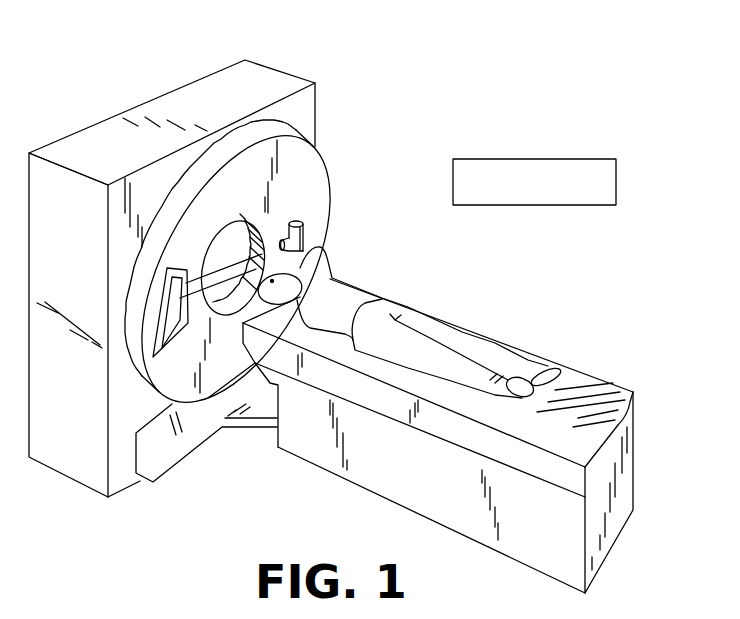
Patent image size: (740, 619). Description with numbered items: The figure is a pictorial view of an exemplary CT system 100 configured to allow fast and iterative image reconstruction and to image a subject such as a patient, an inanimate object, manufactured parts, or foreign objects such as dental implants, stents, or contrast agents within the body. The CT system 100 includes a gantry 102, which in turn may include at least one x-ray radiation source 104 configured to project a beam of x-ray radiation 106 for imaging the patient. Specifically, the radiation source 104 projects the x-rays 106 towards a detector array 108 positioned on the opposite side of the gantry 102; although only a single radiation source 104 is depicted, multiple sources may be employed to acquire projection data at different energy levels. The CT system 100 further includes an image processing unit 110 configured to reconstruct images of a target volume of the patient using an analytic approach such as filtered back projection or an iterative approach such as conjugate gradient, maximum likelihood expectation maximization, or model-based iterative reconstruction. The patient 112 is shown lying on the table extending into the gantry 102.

The CT system 100 is at (568, 46).
The gantry 102 is at (446, 182).
The x-ray radiation source 104 is at (307, 240).
The beam of x-ray radiation 106 is at (212, 282).
The detector array 108 is at (173, 333).
The image processing unit 110 is at (581, 159).
The patient 112 is at (338, 293).